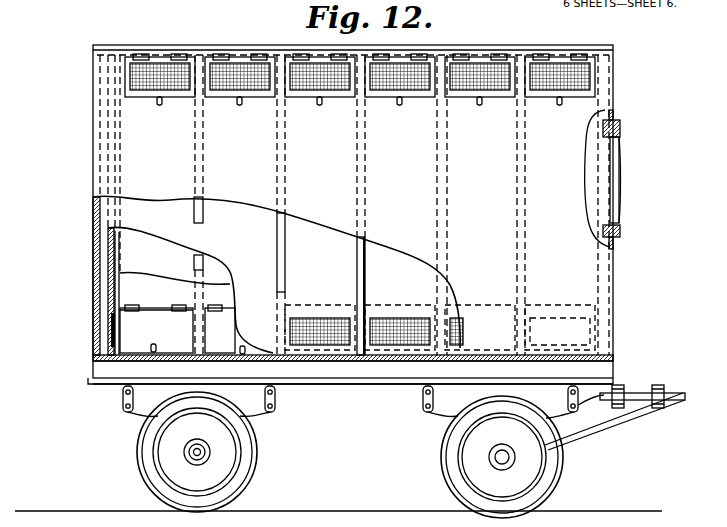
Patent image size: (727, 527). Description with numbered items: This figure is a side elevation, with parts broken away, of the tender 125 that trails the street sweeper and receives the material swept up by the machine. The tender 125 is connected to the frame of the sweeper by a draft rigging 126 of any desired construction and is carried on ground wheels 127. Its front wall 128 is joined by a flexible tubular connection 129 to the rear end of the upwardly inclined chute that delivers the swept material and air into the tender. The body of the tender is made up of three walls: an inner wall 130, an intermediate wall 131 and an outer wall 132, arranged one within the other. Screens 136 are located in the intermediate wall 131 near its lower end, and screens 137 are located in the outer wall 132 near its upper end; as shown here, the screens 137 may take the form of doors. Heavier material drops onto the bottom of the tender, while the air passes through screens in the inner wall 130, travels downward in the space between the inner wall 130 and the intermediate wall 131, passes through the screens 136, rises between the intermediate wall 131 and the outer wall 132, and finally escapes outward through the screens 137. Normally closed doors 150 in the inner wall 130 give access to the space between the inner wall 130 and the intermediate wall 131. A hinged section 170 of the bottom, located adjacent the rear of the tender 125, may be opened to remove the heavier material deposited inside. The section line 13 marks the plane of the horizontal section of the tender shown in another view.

The section line 13- 13 is at (64, 54).
The tender 125 is at (92, 380).
The draft rigging 126 is at (680, 400).
The ground wheels 127 is at (241, 476).
The front wall 128 is at (613, 243).
The flexible tubular connection 129 is at (613, 122).
The inner wall 130 is at (138, 243).
The intermediate wall 131 is at (108, 292).
The outer wall 132 is at (93, 235).
The screens 136 is at (110, 330).
The screens 137 is at (308, 75).
The doors 150 is at (212, 325).
The hinged section 170 is at (185, 359).